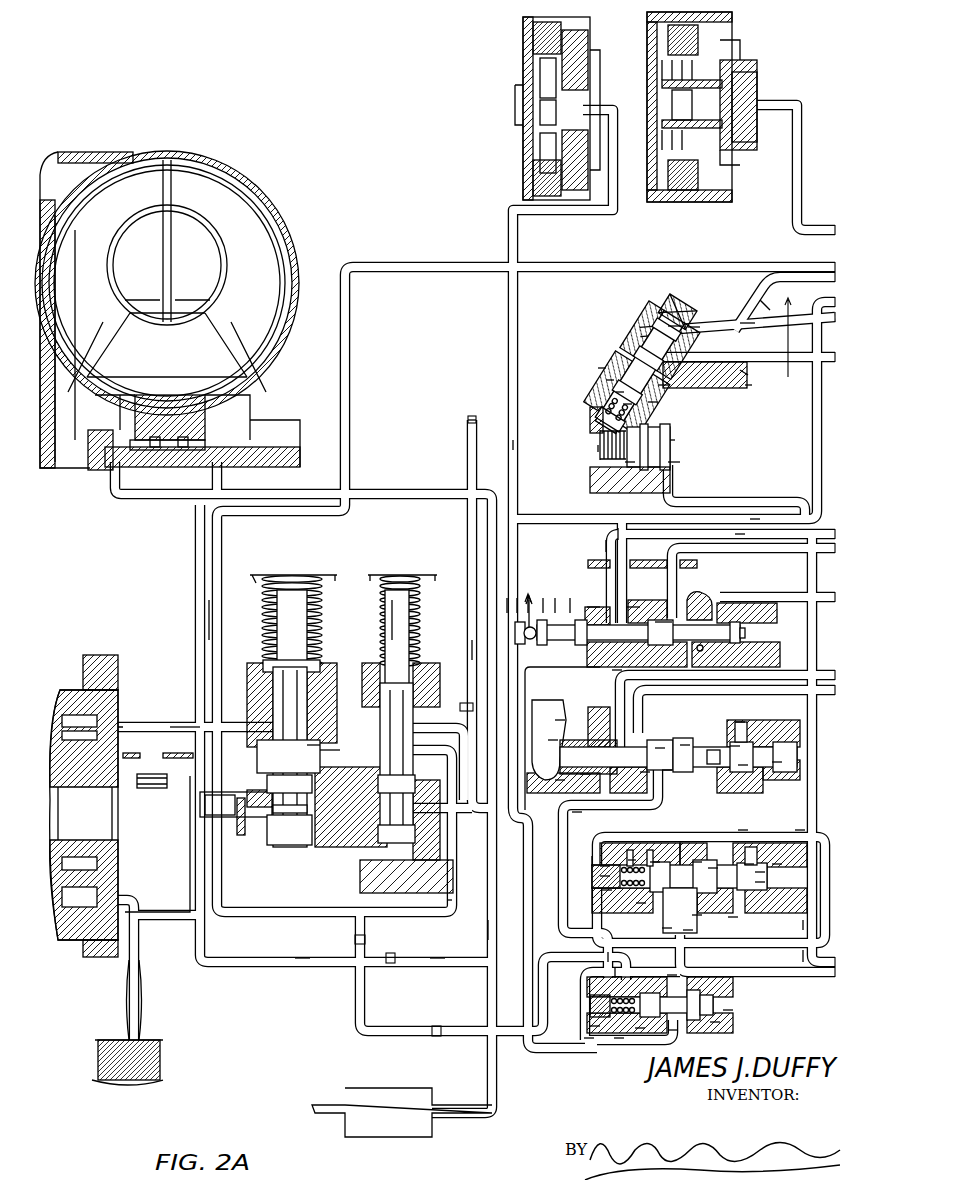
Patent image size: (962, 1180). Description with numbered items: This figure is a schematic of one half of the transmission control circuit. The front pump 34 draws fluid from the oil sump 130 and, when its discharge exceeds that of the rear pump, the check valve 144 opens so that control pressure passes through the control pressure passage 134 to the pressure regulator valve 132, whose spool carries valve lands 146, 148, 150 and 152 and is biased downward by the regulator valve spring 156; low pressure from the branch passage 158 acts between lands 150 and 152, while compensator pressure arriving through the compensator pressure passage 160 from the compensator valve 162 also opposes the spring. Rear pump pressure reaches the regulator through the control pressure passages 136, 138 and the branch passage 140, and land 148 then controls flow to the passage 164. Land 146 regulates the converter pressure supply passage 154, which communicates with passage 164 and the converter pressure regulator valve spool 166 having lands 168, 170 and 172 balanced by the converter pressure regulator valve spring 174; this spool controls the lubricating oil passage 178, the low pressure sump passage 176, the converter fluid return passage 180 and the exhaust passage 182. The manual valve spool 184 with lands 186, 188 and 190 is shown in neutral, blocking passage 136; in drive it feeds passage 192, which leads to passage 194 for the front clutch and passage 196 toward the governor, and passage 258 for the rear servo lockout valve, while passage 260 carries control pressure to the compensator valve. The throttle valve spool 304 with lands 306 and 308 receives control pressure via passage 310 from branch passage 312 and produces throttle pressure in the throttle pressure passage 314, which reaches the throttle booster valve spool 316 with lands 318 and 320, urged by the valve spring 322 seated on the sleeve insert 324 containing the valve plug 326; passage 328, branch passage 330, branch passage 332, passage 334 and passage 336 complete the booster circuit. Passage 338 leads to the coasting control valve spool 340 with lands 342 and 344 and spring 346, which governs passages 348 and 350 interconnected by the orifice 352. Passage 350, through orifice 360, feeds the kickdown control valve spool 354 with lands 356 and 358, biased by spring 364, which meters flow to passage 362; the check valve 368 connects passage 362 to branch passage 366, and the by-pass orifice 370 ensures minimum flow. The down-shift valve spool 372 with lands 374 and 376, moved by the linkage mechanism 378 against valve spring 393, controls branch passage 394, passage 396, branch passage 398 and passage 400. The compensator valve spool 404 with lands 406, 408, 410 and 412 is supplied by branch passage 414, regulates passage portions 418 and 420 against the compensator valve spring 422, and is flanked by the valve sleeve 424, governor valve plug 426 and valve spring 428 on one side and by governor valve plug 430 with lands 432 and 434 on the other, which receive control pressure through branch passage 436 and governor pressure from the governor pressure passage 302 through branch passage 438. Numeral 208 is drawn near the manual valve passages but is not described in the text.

The front pump 34 is at (74, 680).
The oil sump 130 is at (168, 1058).
The pressure regulator valve 132 is at (312, 703).
The control pressure passage 134 is at (182, 720).
The control pressure passage 136 is at (522, 645).
The control pressure passage 138 is at (435, 963).
The branch passage 140 is at (210, 818).
The one-way check valve 144 is at (162, 767).
The valve land 146 is at (300, 728).
The valve land 148 is at (312, 778).
The valve land 150 is at (308, 810).
The valve land 152 is at (303, 826).
The converter pressure supply passage 154 is at (213, 626).
The regulator valve spring 156 is at (320, 625).
The branch passage 158 is at (248, 835).
The compensator pressure passage 160 is at (358, 905).
The compensator valve 162 is at (712, 868).
The passage 164 is at (320, 740).
The converter pressure regulator valve spool 166 is at (412, 705).
The valve land 168 is at (340, 752).
The valve land 170 is at (412, 783).
The valve land 172 is at (412, 835).
The converter pressure regulator valve spring 174 is at (420, 625).
The low pressure sump passage 176 is at (298, 920).
The lubricating oil passage 178 is at (470, 424).
The converter fluid return passage 180 is at (480, 650).
The exhaust passage 182 is at (478, 924).
The manual valve spool 184 is at (622, 615).
The valve land 186 is at (590, 617).
The valve land 188 is at (660, 622).
The valve land 190 is at (742, 633).
The passage 192 is at (618, 532).
The passage 194 is at (542, 430).
The passage 196 is at (760, 518).
The passage 208 is at (735, 536).
The passage 258 is at (600, 547).
The passage 260 is at (803, 955).
The governor pressure passage 302 is at (802, 830).
The throttle valve spool 304 is at (742, 722).
The valve land 306 is at (733, 750).
The valve land 308 is at (742, 768).
The passage 310 is at (647, 777).
The branch passage 312 is at (580, 820).
The throttle pressure passage 314 is at (778, 772).
The throttle booster valve spool 316 is at (672, 1034).
The valve land 318 is at (640, 1030).
The valve land 320 is at (715, 1027).
The valve spring 322 is at (617, 1042).
The sleeve insert 324 is at (592, 1030).
The valve plug 326 is at (592, 1003).
The passage 328 is at (612, 952).
The branch passage 330 is at (672, 975).
The branch passage 332 is at (728, 1014).
The passage 334 is at (618, 970).
The passage 336 is at (587, 1042).
The passage 338 is at (806, 925).
The 3-2 coasting control valve spool 340 is at (668, 445).
The valve land 342 is at (628, 468).
The valve land 344 is at (672, 468).
The valve spring 346 is at (598, 450).
The passage 348 is at (748, 388).
The passage 350 is at (618, 395).
The flow restricting orifice 352 is at (625, 408).
The 3-2 kickdown control valve spool 354 is at (693, 325).
The valve land 356 is at (662, 390).
The valve land 358 is at (652, 404).
The flow restricting orifice 360 is at (598, 372).
The passage 362 is at (745, 372).
The spring 364 is at (675, 325).
The branch passage 366 is at (762, 306).
The one-way check valve 368 is at (745, 322).
The by-pass orifice 370 is at (608, 384).
The down-shift valve spool 372 is at (560, 722).
The valve land 374 is at (560, 784).
The valve land 376 is at (683, 748).
The mechanical linkage mechanism 378 is at (554, 744).
The valve spring 393 is at (585, 779).
The branch passage 394 is at (668, 774).
The passage 396 is at (615, 680).
The branch passage 398 is at (725, 648).
The passage 400 is at (668, 742).
The compensator valve spool 404 is at (640, 905).
The valve land 406 is at (630, 862).
The valve land 408 is at (697, 915).
The valve land 410 is at (698, 864).
The valve land 412 is at (748, 866).
The branch passage 414 is at (655, 864).
The passage portion 418 is at (665, 930).
The passage portion 420 is at (686, 932).
The compensator valve spring 422 is at (605, 892).
The valve sleeve 424 is at (604, 868).
The governor valve plug 426 is at (592, 862).
The valve spring 428 is at (603, 880).
The governor valve plug 430 is at (760, 874).
The valve land 432 is at (760, 884).
The valve land 434 is at (735, 919).
The branch passage 436 is at (745, 832).
The branch passage 438 is at (776, 866).